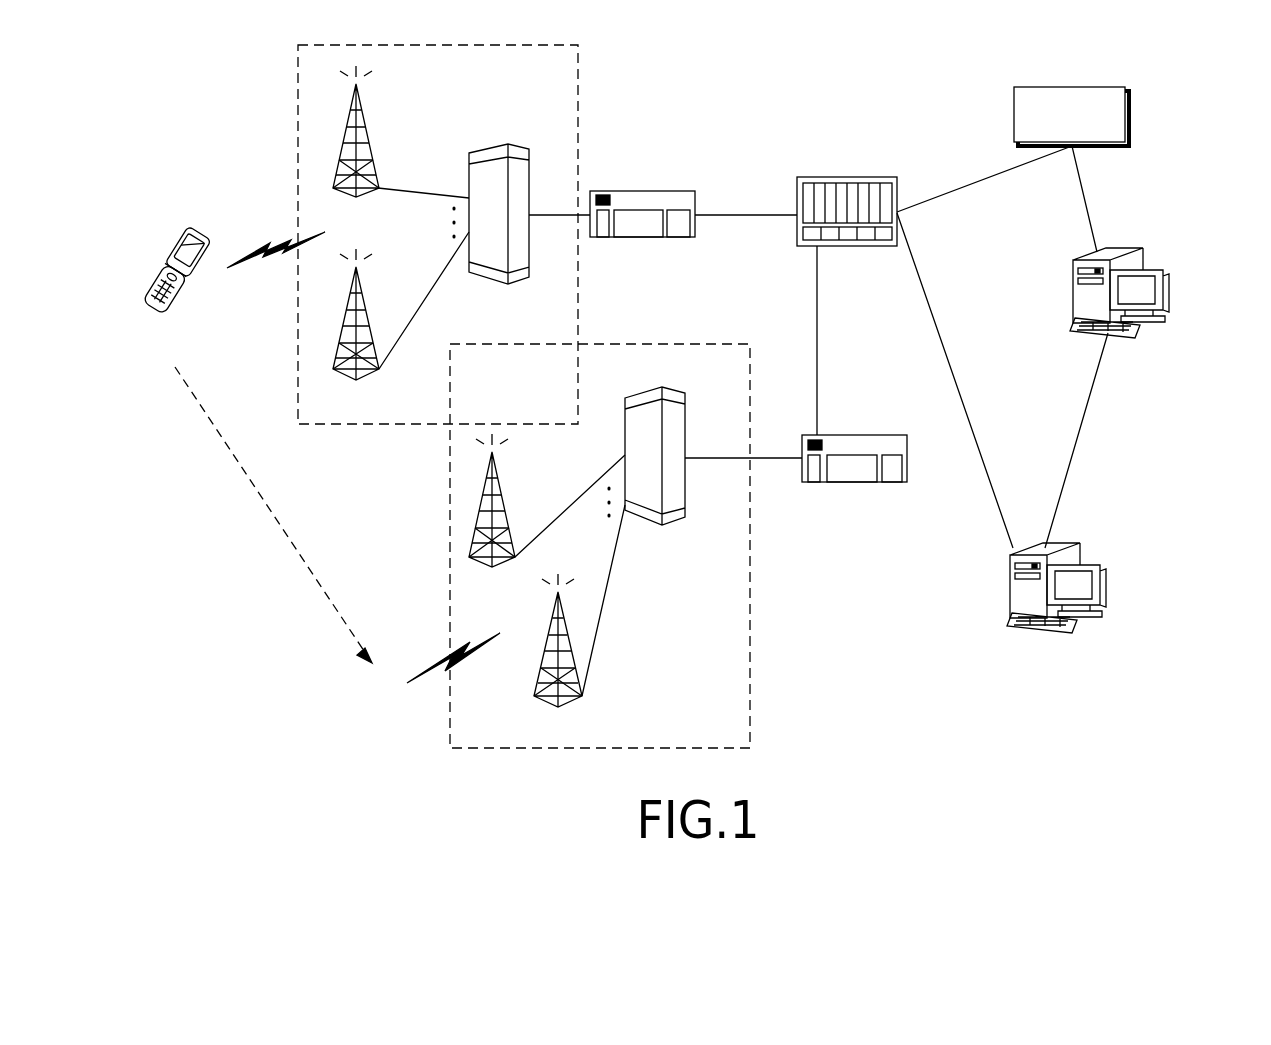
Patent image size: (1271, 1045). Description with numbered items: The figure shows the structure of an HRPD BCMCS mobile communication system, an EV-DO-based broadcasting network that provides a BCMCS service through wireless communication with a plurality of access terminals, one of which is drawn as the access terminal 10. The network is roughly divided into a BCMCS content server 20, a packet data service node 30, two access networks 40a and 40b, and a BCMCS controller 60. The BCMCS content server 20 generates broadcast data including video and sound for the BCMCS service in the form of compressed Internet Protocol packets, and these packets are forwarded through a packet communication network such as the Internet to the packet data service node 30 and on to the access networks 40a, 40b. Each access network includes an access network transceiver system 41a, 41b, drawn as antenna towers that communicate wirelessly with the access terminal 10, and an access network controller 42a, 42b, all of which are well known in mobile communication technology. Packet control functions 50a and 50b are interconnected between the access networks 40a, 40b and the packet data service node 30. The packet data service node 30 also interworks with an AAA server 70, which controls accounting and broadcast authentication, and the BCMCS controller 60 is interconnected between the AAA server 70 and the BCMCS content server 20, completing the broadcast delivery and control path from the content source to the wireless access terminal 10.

The access terminal 10 is at (188, 229).
The BCMCS content server 20 is at (1061, 546).
The packet data service node 30 is at (846, 177).
The access network 40a is at (440, 45).
The access network 40b is at (615, 344).
The access network transceiver system 41a is at (363, 110).
The access network transceiver system 41b is at (500, 480).
The access network controller 42a is at (520, 152).
The access network controller 42b is at (676, 393).
The packet control function 50a is at (633, 191).
The packet control function 50b is at (878, 435).
The BCMCS controller 60 is at (1128, 253).
The AAA server 70 is at (1085, 87).